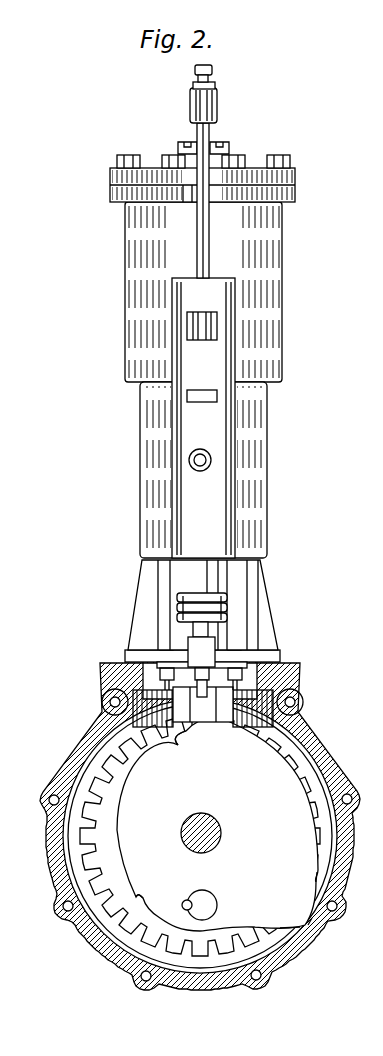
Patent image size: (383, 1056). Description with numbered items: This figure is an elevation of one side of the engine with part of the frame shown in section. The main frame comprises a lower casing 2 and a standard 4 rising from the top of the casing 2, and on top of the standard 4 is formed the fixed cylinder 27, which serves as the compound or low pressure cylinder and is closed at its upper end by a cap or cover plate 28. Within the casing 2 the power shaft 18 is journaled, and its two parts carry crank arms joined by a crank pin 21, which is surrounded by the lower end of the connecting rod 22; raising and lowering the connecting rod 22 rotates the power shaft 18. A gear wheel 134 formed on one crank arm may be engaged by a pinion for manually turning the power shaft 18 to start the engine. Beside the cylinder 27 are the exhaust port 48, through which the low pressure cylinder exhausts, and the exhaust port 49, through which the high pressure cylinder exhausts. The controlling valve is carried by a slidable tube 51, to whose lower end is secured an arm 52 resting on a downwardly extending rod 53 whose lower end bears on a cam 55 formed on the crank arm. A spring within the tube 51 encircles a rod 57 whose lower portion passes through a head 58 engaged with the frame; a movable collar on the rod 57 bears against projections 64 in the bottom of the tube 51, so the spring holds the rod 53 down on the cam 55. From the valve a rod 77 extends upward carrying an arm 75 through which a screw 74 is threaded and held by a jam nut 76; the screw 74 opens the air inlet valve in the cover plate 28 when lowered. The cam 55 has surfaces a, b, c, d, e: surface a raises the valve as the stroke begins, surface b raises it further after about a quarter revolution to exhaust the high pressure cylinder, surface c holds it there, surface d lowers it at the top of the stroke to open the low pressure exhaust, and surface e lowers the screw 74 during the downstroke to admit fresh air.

The lower casing 2 is at (211, 968).
The standard 4 is at (237, 608).
The power shaft 18 is at (212, 833).
The crank pin 21 is at (205, 905).
The connecting rod 22 is at (180, 700).
The fixed cylinder 27 is at (282, 260).
The cap or cover plate 28 is at (296, 178).
The exhaust port 48 is at (212, 325).
The exhaust port 49 is at (212, 396).
The tube 51 is at (247, 574).
The arm 52 is at (177, 598).
The rod 53 is at (206, 703).
The cam 55 is at (217, 824).
The rod 57 is at (210, 632).
The head 58 is at (252, 672).
The projections 64 is at (177, 609).
The screw 74 is at (213, 70).
The arm 75 is at (200, 104).
The jam nut 76 is at (214, 86).
The rod 77 is at (200, 238).
The gear wheel 134 is at (132, 915).
The cam surface a is at (186, 746).
The cam surface b is at (319, 877).
The cam surface c is at (328, 918).
The cam surface d is at (290, 933).
The cam surface e is at (144, 887).